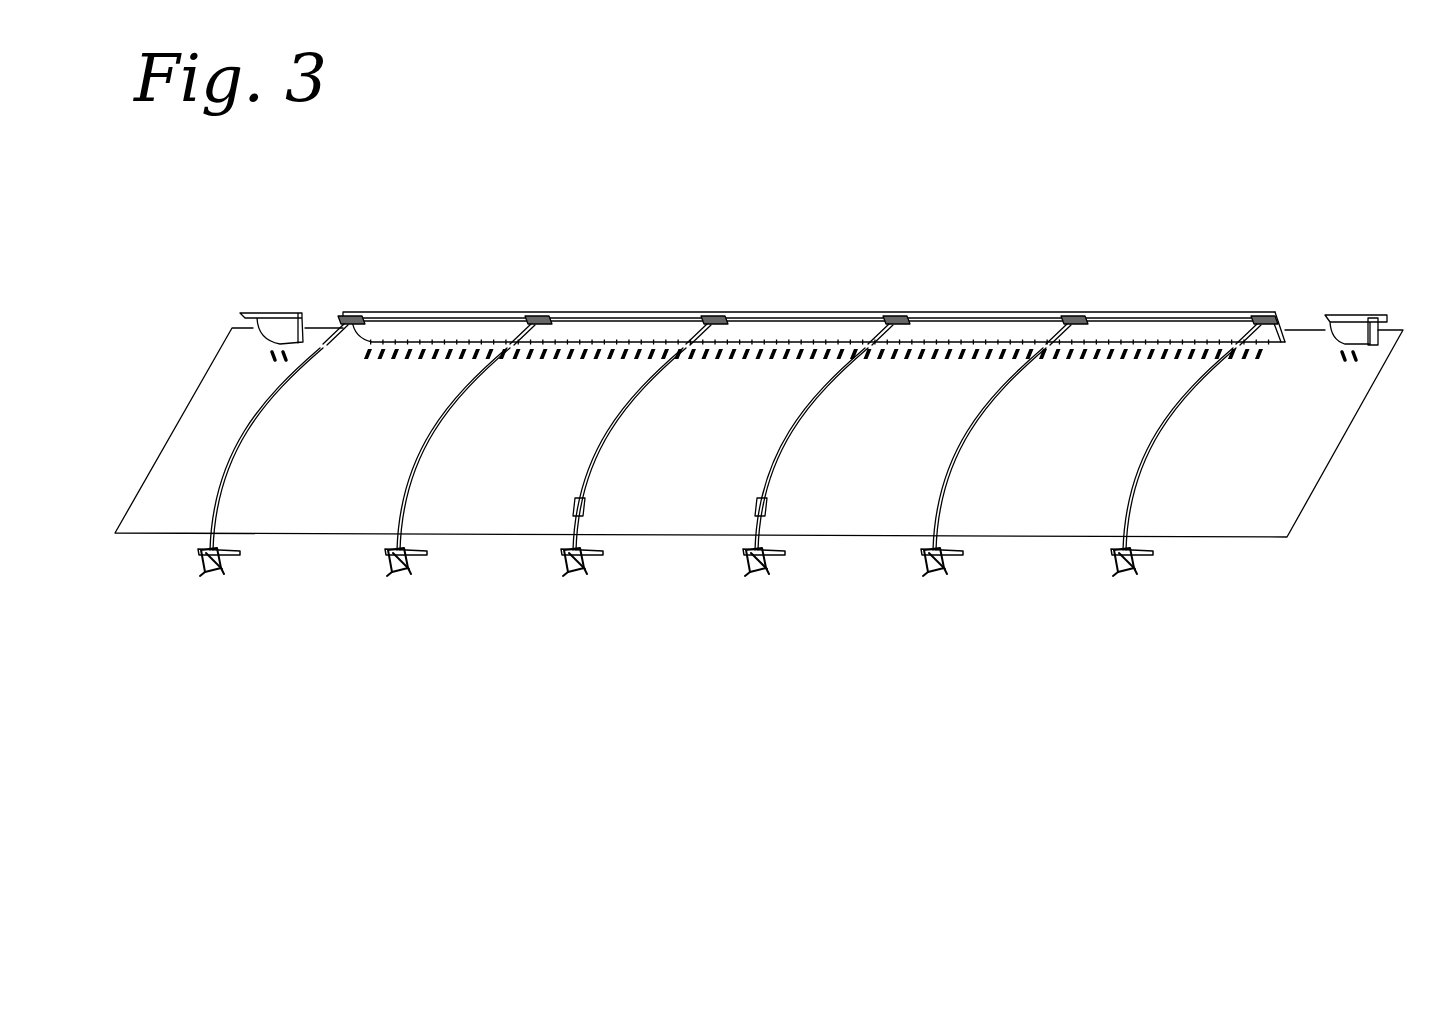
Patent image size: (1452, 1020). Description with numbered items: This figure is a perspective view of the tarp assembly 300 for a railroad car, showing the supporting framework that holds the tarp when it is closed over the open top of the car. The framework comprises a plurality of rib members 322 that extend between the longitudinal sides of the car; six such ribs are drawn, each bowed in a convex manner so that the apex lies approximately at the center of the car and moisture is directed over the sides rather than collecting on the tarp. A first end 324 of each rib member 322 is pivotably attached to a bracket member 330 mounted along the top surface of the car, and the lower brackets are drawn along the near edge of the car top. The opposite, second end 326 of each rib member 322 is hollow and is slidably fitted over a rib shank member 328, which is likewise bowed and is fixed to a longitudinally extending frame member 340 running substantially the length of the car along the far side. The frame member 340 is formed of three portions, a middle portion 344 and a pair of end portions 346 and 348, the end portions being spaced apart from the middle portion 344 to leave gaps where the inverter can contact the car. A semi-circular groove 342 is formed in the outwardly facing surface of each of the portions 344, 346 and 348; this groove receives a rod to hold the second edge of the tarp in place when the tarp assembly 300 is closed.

The tarp assembly 300 is at (457, 168).
The rib member 322 is at (803, 408).
The first end 324 is at (752, 546).
The second end 326 is at (850, 350).
The rib shank member 328 is at (898, 337).
The bracket member 330 is at (753, 570).
The frame member 340 is at (1193, 312).
The semi-circular groove 342 is at (1280, 325).
The middle portion 344 is at (1122, 312).
The end portion 346 is at (1382, 328).
The end portion 348 is at (285, 318).